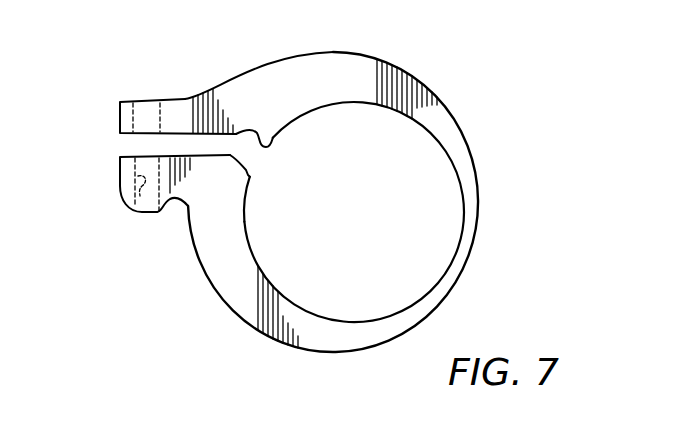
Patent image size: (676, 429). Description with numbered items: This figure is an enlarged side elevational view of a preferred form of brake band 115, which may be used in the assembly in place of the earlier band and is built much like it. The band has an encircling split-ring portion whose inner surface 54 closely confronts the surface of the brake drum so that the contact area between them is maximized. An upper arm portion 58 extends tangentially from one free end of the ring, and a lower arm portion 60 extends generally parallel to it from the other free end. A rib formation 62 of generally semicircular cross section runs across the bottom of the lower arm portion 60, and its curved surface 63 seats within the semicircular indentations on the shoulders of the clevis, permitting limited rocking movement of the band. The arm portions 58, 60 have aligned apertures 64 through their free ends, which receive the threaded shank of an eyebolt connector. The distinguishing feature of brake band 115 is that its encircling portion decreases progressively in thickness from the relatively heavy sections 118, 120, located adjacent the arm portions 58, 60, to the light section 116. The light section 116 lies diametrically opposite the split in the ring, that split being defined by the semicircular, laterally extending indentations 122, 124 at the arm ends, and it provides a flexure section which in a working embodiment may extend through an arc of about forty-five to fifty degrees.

The inner surface 54 is at (458, 172).
The upper arm portion 58 is at (233, 90).
The lower arm portion 60 is at (248, 197).
The rib formation 62 is at (181, 200).
The curved surface 63 is at (186, 203).
The aligned apertures 64 is at (138, 100).
The brake band 115 is at (335, 189).
The light section 116 is at (456, 269).
The heavy section 118 is at (281, 108).
The heavy section 120 is at (210, 230).
The semicircular indentation 122 is at (268, 147).
The semicircular indentation 124 is at (248, 168).